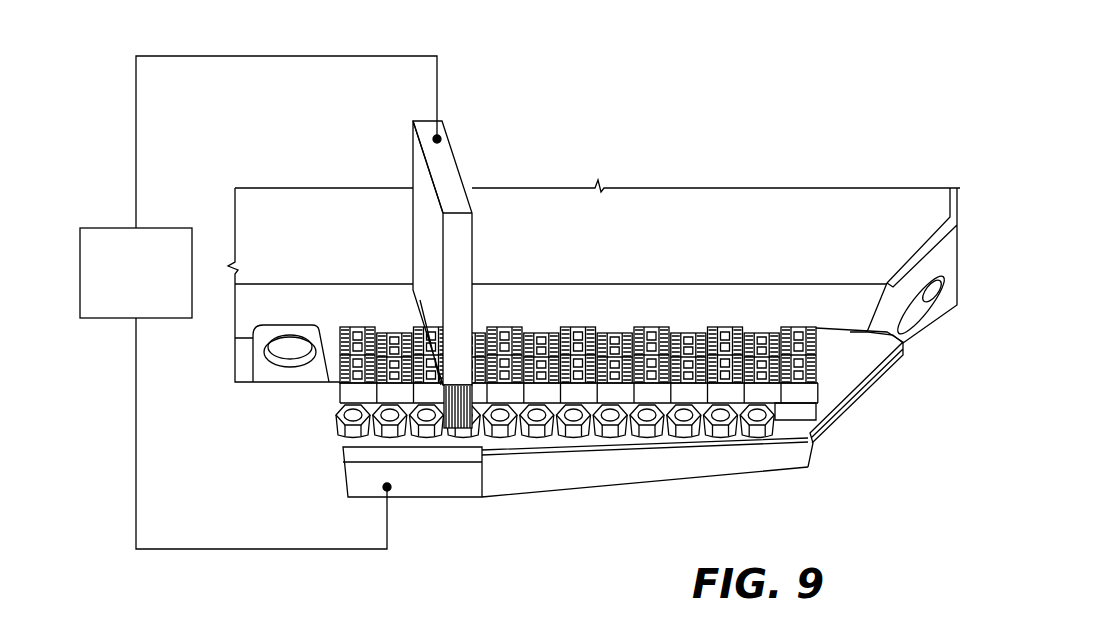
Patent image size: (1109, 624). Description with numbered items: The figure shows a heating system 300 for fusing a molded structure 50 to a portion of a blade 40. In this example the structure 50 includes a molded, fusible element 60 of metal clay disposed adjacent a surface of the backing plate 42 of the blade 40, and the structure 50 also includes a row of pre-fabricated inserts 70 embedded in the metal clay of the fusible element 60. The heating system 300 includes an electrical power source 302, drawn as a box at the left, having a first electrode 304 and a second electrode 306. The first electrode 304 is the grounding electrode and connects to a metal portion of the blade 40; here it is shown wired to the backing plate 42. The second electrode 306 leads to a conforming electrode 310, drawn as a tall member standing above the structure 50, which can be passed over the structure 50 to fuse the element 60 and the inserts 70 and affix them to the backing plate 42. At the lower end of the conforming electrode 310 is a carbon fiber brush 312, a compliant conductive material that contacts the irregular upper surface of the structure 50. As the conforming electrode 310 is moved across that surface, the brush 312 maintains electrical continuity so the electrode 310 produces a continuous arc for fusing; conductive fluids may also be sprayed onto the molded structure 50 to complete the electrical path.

The blade 40 is at (745, 187).
The backing plate 42 is at (712, 477).
The structure 50 is at (585, 466).
The fusible element 60 is at (868, 397).
The pre-fabricated inserts 70 is at (340, 438).
The heating system 300 is at (242, 298).
The electrical power source 302 is at (103, 228).
The first electrode 304 is at (240, 549).
The second electrode 306 is at (289, 55).
The conforming electrode 310 is at (456, 163).
The carbon fiber brush 312 is at (448, 437).